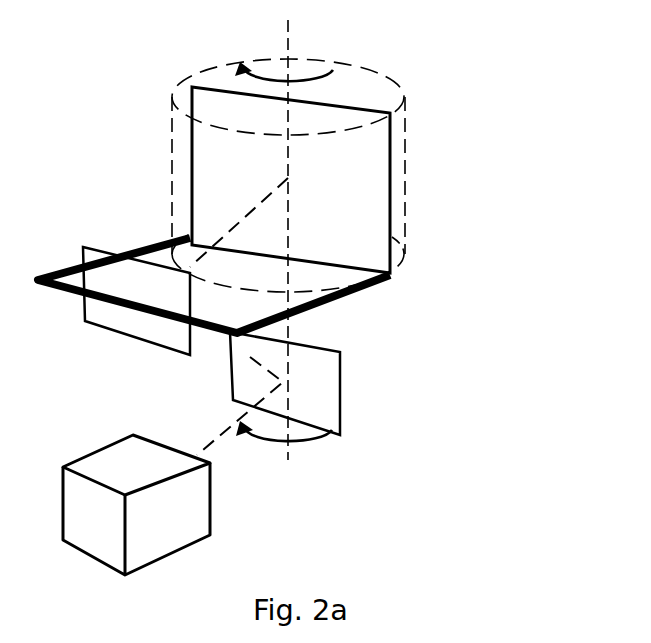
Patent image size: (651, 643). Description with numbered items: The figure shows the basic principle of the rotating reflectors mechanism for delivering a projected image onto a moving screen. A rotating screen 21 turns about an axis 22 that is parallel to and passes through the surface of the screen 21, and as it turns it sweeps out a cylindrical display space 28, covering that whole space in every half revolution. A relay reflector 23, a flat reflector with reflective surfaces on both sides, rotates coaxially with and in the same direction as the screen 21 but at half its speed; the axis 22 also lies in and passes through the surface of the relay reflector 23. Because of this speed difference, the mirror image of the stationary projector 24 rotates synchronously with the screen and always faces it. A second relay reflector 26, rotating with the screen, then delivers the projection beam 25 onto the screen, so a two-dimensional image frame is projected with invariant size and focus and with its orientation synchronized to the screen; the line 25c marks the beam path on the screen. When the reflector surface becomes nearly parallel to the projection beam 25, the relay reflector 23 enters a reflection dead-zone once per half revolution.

The rotating screen 21 is at (372, 181).
The axis 22 is at (283, 37).
The relay reflector 23 is at (340, 378).
The stationary projector 24 is at (183, 517).
The projection beam 25 is at (228, 440).
The diagonal line of plate 25c is at (235, 222).
The second relay reflector 26 is at (118, 333).
The cylindrical display space 28 is at (388, 95).